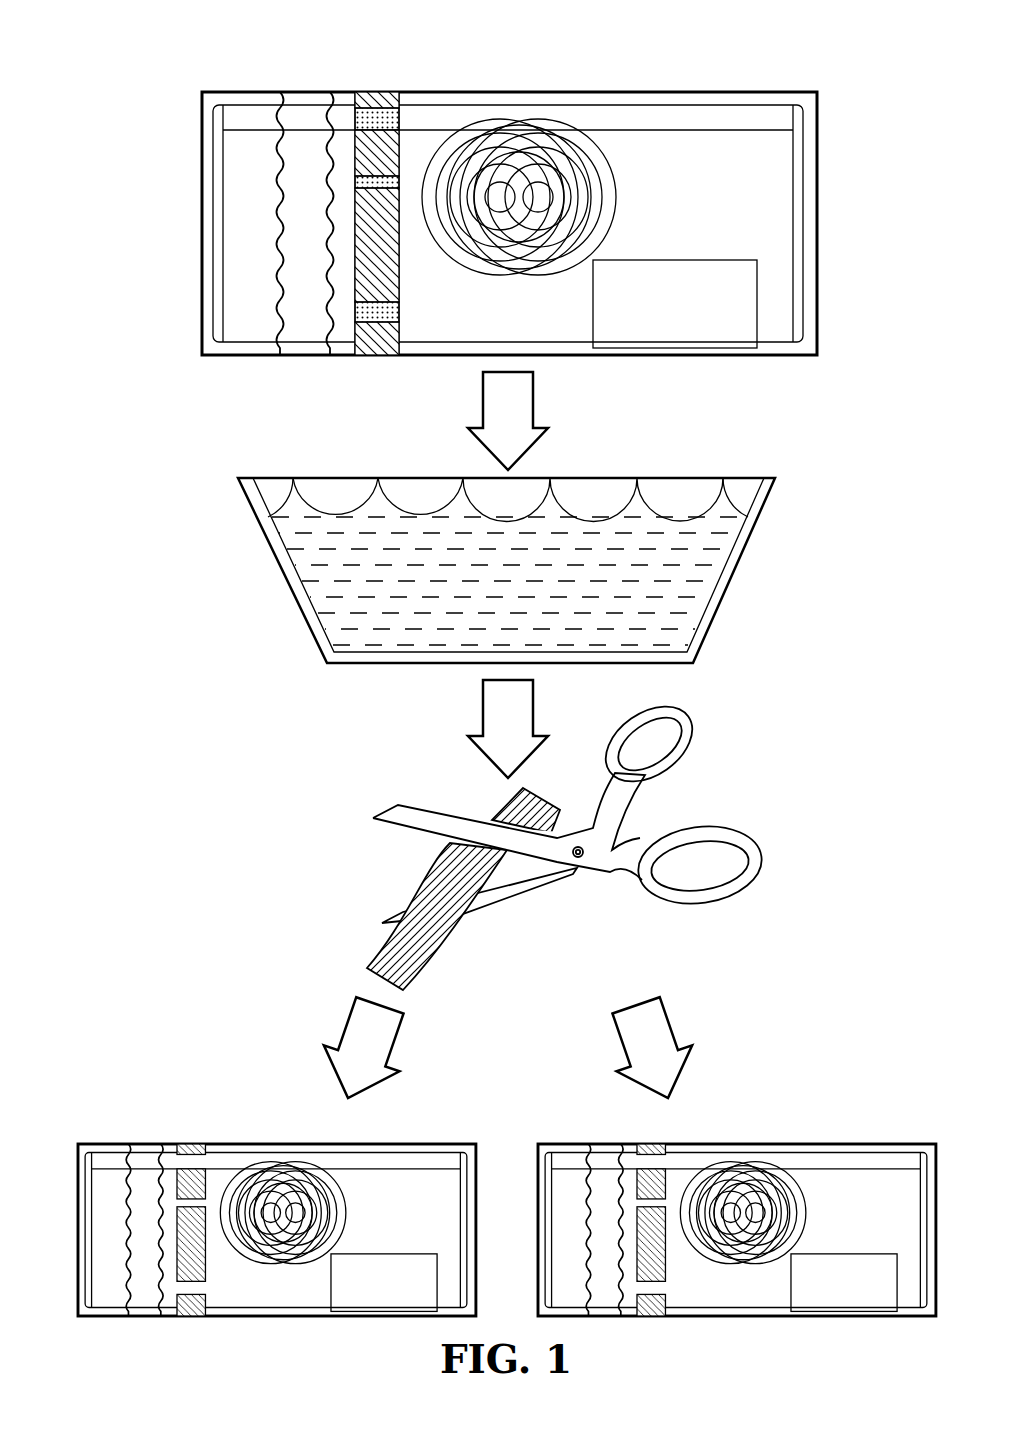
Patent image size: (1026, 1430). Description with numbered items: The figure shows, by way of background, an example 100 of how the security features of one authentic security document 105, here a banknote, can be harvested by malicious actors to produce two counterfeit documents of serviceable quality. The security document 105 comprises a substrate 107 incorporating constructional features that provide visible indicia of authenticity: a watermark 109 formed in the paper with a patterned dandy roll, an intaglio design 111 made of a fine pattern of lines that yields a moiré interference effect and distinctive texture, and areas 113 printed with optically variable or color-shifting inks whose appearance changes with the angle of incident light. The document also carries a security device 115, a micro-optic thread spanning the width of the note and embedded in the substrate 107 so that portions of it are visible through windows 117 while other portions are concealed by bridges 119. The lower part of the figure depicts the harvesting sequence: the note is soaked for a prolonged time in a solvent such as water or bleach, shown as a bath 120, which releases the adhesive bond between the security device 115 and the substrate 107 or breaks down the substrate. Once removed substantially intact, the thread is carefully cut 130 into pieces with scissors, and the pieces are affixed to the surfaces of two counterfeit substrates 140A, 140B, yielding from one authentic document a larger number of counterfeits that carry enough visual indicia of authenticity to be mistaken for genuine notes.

The example 100 is at (550, 205).
The security document 105 is at (824, 187).
The substrate 107 is at (247, 343).
The watermark 109 is at (303, 117).
The intaglio design 111 is at (617, 193).
The areas printed with specialized inks 113 is at (665, 341).
The security device 115 is at (365, 102).
The windows 117 is at (409, 145).
The bridges 119 is at (410, 313).
The liquid bath 120 is at (282, 568).
The cut 130 is at (760, 860).
The counterfeit substrate 140A is at (222, 1143).
The counterfeit substrate 140B is at (792, 1143).